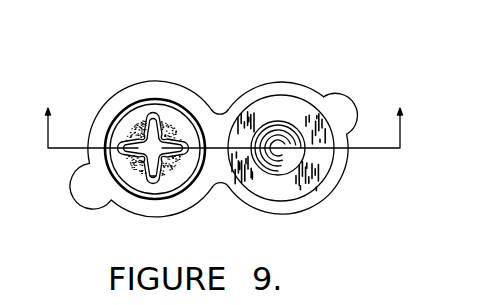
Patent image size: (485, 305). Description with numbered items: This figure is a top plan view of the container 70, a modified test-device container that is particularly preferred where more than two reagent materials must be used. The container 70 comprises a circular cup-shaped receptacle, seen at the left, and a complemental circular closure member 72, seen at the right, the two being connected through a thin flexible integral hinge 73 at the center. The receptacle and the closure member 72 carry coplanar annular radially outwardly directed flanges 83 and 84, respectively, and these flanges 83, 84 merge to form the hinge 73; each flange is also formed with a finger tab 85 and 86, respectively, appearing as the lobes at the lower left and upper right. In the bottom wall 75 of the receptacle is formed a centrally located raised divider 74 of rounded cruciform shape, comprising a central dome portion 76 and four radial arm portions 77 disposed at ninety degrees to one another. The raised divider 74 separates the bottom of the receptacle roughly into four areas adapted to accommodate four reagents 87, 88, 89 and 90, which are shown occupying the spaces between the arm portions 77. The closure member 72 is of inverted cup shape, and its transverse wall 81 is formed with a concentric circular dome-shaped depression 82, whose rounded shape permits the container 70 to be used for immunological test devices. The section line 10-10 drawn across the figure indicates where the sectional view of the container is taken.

The section line 10- 10 is at (228, 109).
The container 70 is at (321, 221).
The closure member 72 is at (300, 83).
The hinge 73 is at (219, 113).
The raised divider 74 is at (157, 136).
The bottom wall 75 is at (178, 180).
The central dome portion 76 is at (162, 154).
The radial arm portions 77 is at (148, 118).
The transverse wall 81 is at (282, 105).
The dome-shaped depression 82 is at (273, 170).
The flange 83 is at (108, 107).
The flange 84 is at (333, 178).
The finger tab 85 is at (90, 195).
The finger tab 86 is at (338, 100).
The reagent 87 is at (135, 178).
The reagent 88 is at (132, 130).
The reagent 89 is at (172, 128).
The reagent 90 is at (170, 175).